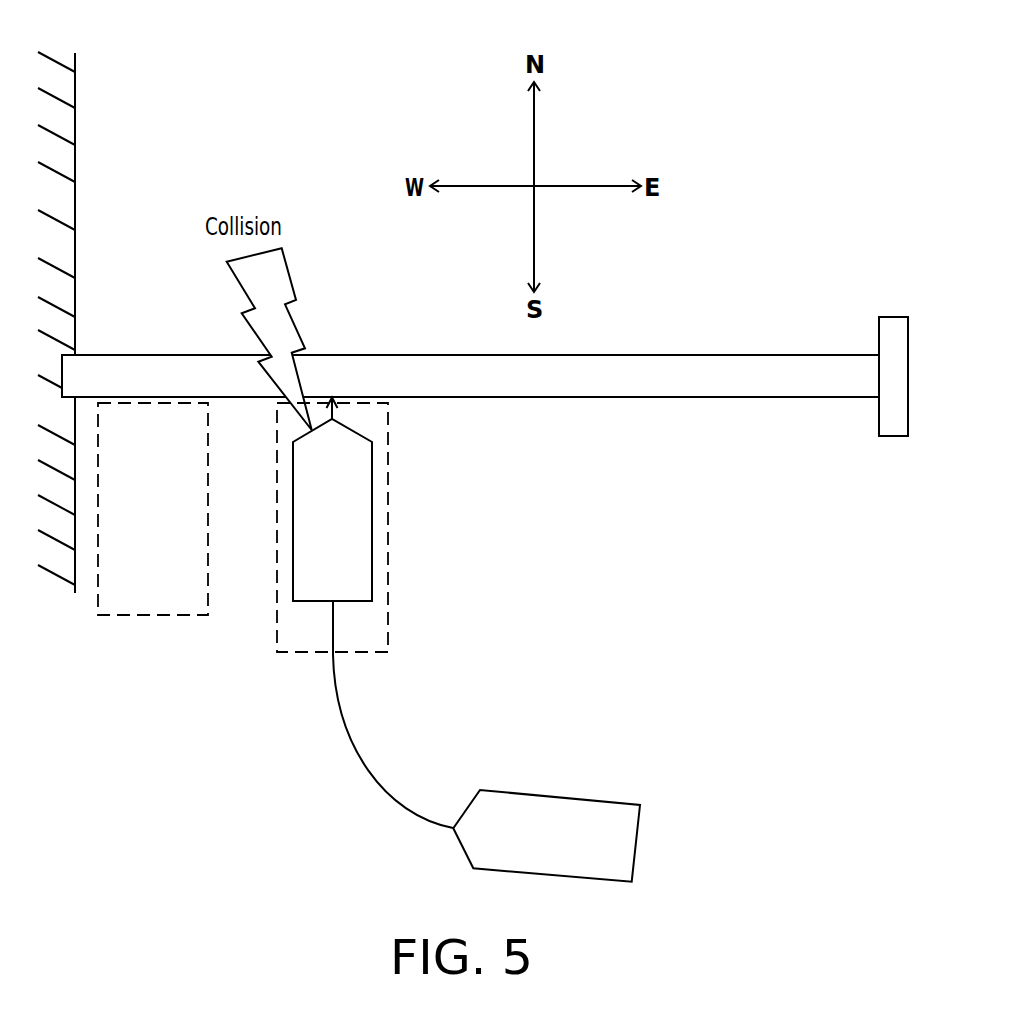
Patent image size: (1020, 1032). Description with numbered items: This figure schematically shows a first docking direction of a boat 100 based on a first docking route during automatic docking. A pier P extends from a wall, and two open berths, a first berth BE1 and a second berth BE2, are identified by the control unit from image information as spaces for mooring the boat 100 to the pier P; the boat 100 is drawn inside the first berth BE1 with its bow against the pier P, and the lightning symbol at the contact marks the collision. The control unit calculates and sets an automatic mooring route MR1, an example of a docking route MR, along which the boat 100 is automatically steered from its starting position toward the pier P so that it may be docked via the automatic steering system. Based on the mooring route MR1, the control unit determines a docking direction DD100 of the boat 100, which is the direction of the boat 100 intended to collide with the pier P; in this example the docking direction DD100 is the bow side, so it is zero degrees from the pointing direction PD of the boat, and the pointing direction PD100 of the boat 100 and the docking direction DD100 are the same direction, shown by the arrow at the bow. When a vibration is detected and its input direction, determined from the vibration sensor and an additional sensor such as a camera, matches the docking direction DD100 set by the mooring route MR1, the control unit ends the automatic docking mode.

The boat 100 is at (466, 650).
The pier P is at (749, 356).
The first berth BE1 is at (332, 528).
The second berth BE2 is at (153, 509).
The mooring route MR is at (372, 717).
The automatic mooring route MR1 is at (393, 714).
The docking direction DD100 is at (444, 442).
The pointing direction PD is at (332, 409).
The pointing direction of the boat PD100 is at (336, 411).